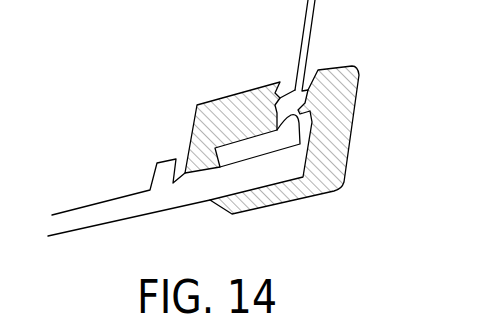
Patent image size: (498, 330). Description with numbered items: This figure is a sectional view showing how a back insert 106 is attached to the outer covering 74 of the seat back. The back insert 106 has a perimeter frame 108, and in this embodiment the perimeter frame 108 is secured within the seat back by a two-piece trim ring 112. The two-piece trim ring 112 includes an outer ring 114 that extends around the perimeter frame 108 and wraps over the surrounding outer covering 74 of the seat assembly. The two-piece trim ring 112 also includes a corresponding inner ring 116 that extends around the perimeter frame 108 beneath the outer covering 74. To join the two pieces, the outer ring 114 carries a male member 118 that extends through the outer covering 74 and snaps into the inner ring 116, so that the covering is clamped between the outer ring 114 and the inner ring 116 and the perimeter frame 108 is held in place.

The outer covering 74 is at (311, 34).
The back insert 106 is at (164, 203).
The perimeter frame 108 is at (114, 208).
The two-piece trim ring 112 is at (359, 88).
The outer ring 114 is at (325, 157).
The inner ring 116 is at (213, 115).
The male member 118 is at (267, 92).